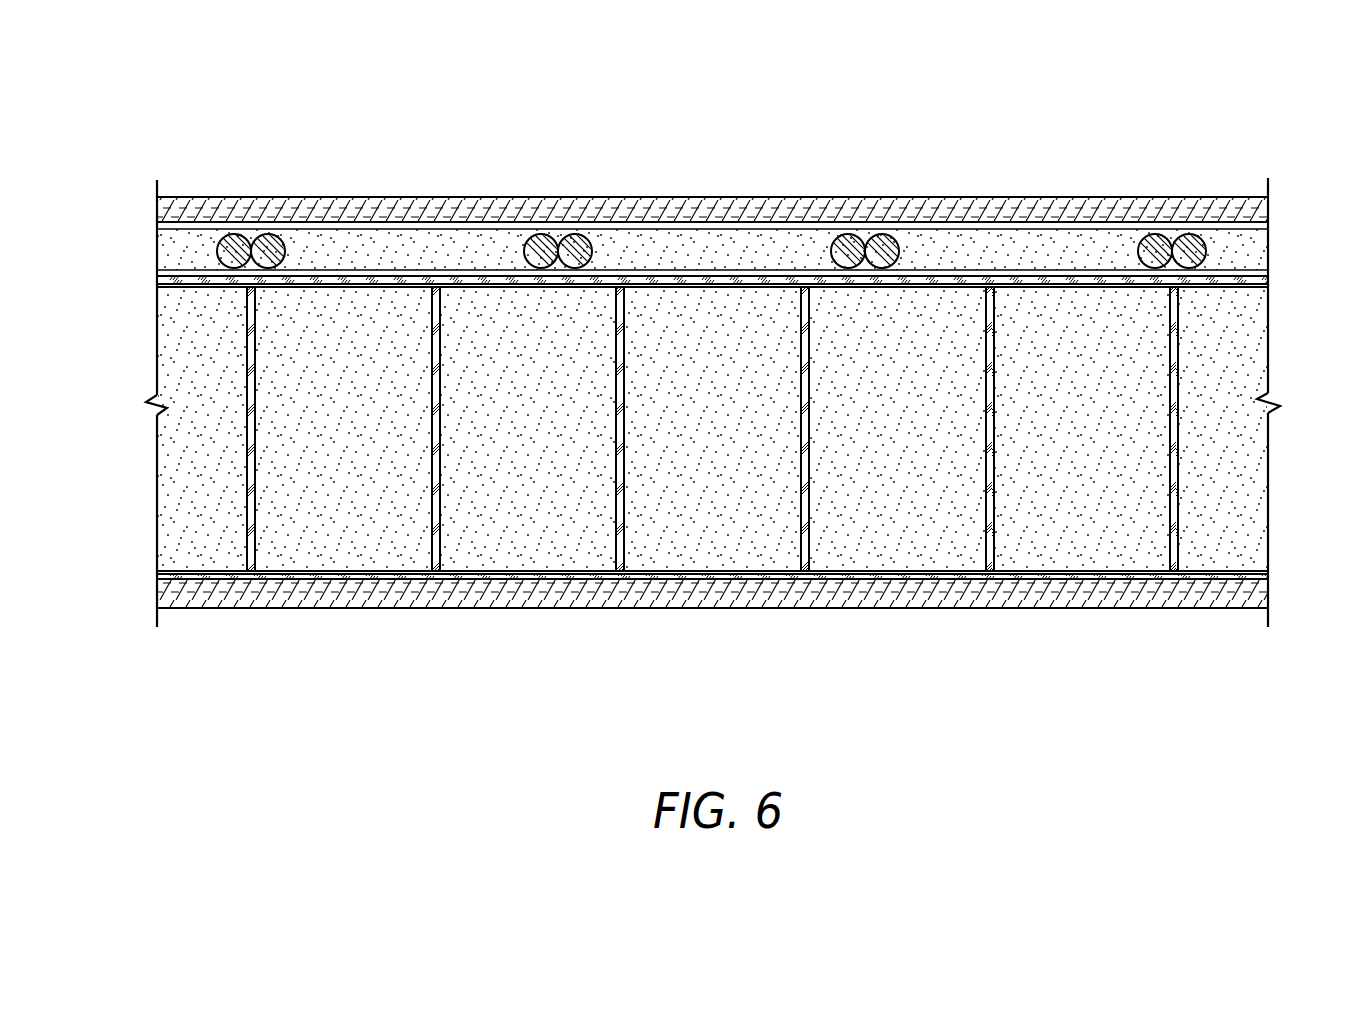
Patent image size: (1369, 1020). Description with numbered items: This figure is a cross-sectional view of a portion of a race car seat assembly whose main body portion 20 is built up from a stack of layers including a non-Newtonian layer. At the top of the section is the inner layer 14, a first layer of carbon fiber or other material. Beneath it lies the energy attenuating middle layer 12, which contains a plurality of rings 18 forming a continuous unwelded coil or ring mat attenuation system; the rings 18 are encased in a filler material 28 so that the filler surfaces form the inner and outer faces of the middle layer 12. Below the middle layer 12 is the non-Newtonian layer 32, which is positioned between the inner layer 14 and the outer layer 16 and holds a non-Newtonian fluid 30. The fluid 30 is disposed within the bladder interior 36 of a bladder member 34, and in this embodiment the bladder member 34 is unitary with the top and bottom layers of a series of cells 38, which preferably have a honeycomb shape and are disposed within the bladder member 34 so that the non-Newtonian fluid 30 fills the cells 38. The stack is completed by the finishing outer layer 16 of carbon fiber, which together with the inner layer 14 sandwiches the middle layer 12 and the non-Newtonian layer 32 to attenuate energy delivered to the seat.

The middle layer 12 is at (140, 245).
The inner layer 14 is at (968, 210).
The outer layer 16 is at (1038, 595).
The rings 18 is at (540, 250).
The main body portion 20 is at (1297, 145).
The filler material 28 is at (692, 232).
The non-Newtonian fluid 30 is at (354, 542).
The non-Newtonian layer 32 is at (112, 411).
The bladder member 34 is at (1253, 284).
The bladder interior 36 is at (908, 543).
The cells 38 is at (1213, 364).